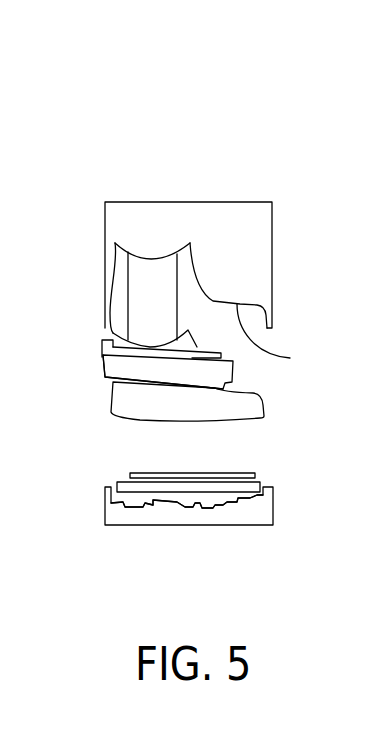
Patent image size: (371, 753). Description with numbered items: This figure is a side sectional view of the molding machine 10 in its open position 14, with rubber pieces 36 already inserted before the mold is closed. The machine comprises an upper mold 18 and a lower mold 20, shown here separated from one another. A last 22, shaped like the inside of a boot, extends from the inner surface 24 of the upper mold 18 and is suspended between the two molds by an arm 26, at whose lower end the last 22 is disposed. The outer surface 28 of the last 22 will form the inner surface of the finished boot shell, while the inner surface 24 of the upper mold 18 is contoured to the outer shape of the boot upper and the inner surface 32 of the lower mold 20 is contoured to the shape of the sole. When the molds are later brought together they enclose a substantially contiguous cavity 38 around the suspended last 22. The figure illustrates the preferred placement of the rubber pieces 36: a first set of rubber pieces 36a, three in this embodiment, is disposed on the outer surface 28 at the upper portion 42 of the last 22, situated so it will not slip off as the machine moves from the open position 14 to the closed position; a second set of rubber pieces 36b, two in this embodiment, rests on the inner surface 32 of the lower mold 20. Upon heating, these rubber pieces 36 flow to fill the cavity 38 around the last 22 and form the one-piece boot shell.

The molding machine 10 is at (223, 138).
The open position 14 is at (147, 128).
The upper mold 18 is at (260, 243).
The lower mold 20 is at (263, 512).
The last 22 is at (247, 408).
The inner surface of the upper mold 24 is at (281, 339).
The arm 26 is at (140, 297).
The outer surface of the last 28 is at (137, 398).
The inner surface of the lower mold 32 is at (225, 505).
The rubber pieces 36 is at (103, 345).
The first set of rubber pieces 36a is at (115, 367).
The second set of rubber pieces 36b is at (255, 485).
The cavity 38 is at (118, 462).
The upper portion of the last 42 is at (193, 347).